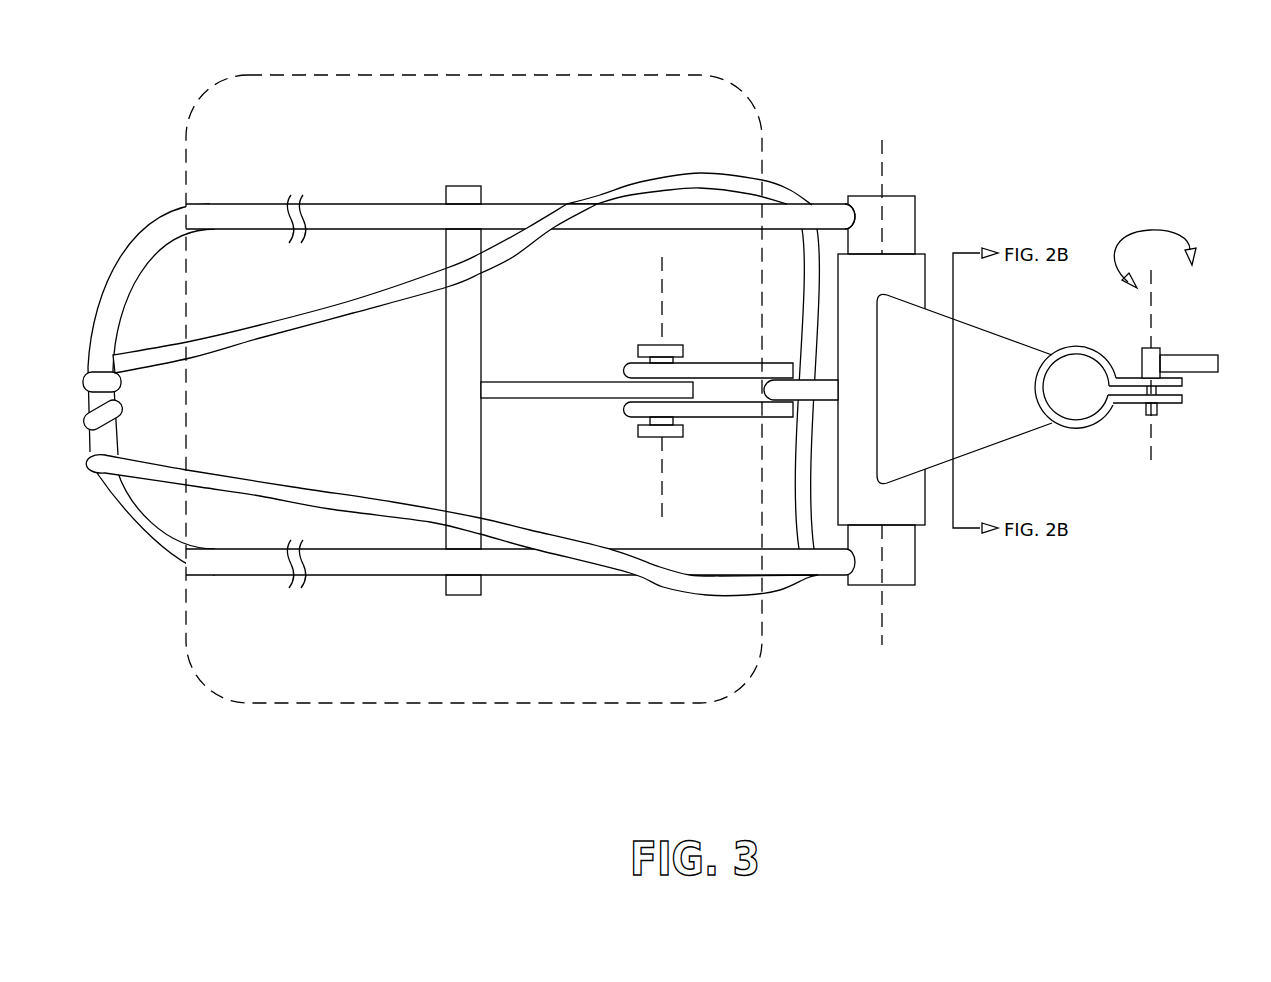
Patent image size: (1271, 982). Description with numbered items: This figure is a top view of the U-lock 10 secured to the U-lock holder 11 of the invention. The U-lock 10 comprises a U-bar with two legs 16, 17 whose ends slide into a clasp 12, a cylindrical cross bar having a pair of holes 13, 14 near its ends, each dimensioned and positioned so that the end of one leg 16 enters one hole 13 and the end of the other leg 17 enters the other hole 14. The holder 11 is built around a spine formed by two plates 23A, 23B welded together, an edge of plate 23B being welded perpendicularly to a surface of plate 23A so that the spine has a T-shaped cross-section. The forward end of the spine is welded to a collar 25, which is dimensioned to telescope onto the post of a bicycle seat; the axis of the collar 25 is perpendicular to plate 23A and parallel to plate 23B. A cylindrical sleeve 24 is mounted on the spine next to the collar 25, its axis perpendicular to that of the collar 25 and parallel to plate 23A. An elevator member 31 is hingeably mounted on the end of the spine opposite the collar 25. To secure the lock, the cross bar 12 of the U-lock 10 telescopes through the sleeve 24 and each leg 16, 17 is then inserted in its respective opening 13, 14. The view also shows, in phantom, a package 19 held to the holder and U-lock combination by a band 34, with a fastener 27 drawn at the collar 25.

The U-lock 10 is at (533, 396).
The U-lock holder 11 is at (646, 213).
The clasp 12 is at (902, 222).
The hole 13 is at (847, 206).
The hole 14 is at (840, 575).
The leg 16 is at (360, 567).
The leg 17 is at (382, 212).
The package 19 is at (700, 705).
The plate 23A is at (985, 355).
The plate 23B is at (785, 393).
The cylindrical sleeve 24 is at (910, 513).
The collar 25 is at (1087, 347).
The clamp fastener 27 is at (1183, 381).
The elevator member 31 is at (467, 323).
The band 34 is at (312, 490).